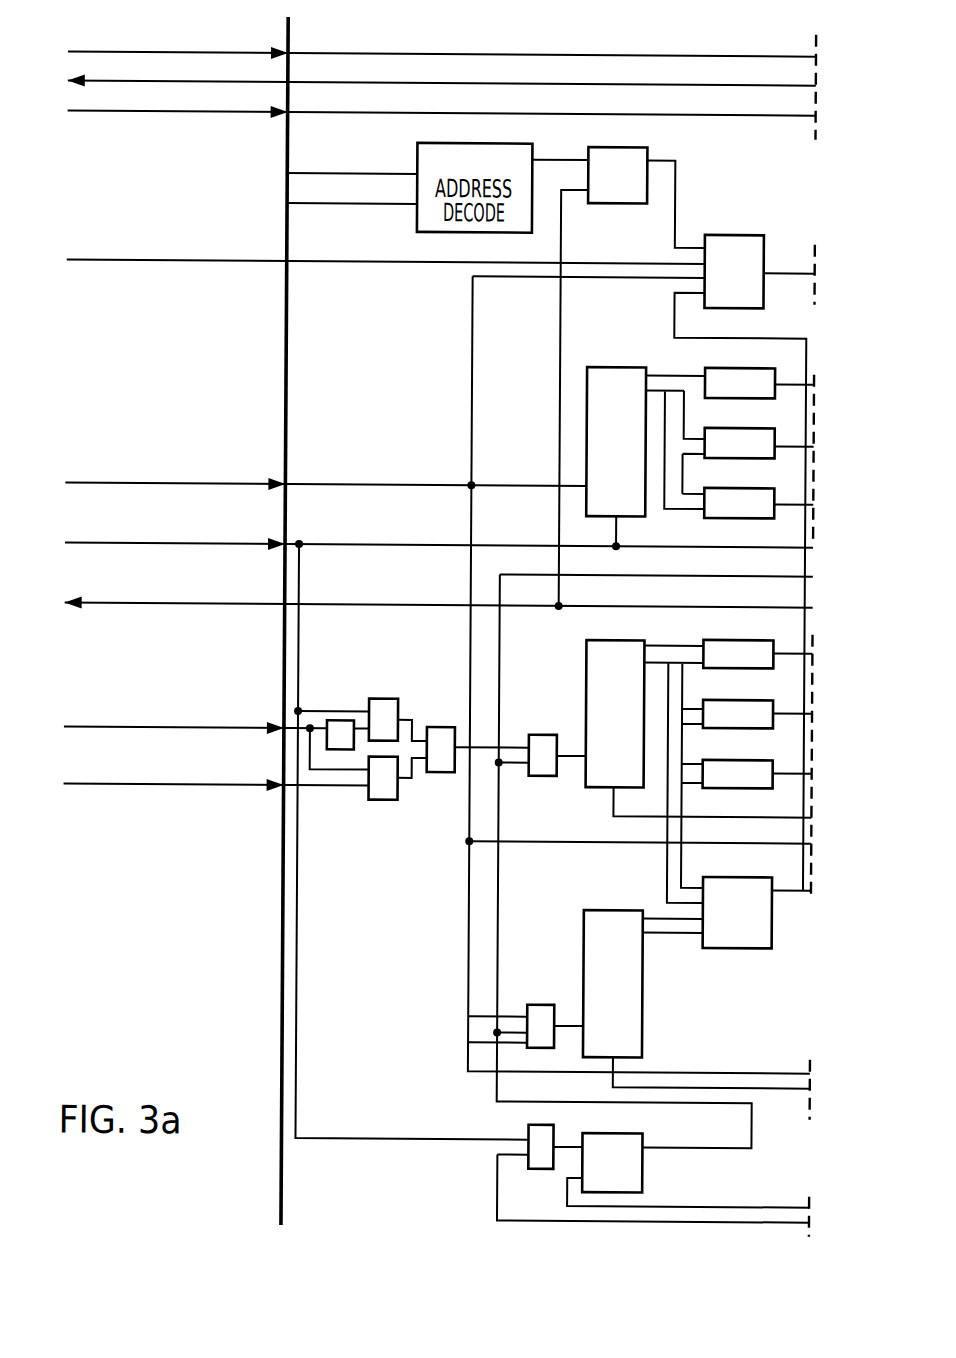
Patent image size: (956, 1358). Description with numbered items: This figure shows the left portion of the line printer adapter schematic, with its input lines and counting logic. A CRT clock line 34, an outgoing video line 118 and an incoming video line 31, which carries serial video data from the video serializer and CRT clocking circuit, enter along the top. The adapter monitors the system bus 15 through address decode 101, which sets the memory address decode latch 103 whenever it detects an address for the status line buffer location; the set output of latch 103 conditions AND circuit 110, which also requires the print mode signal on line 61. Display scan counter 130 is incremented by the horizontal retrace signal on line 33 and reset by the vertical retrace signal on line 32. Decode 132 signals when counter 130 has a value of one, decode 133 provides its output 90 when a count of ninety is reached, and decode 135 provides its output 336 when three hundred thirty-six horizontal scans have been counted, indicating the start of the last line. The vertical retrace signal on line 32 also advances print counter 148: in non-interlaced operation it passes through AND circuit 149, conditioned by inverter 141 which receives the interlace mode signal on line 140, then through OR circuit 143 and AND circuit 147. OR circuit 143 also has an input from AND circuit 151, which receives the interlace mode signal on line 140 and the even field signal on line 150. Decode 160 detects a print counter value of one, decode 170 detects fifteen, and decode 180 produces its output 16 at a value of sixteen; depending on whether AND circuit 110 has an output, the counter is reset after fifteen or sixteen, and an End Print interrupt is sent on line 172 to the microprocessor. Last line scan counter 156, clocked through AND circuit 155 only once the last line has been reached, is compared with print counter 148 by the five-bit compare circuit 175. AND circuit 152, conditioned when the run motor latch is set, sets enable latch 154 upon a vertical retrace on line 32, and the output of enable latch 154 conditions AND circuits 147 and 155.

The CRT clock line 34 is at (215, 52).
The video output line 118 is at (200, 82).
The line 31 is at (202, 113).
The system bus 15 is at (377, 173).
The address decode 101 is at (533, 188).
The memory address decode latch 103 is at (629, 207).
The print mode line 61 is at (212, 263).
The AND circuit 110 is at (719, 231).
The display scan counter 130 is at (589, 413).
The decode 132 is at (724, 396).
The decode 133 is at (726, 456).
The decoder output line 90 is at (794, 433).
The decode 135 is at (725, 516).
The decoder output line 336 is at (793, 492).
The horizontal retrace line 33 is at (391, 484).
The vertical retrace line 32 is at (391, 544).
The End Print interrupt line 172 is at (207, 606).
The interlace mode line 140 is at (265, 727).
The inverter 141 is at (341, 717).
The AND circuit 149 is at (376, 698).
The AND circuit 151 is at (379, 801).
The Even Field line 150 is at (245, 787).
The OR circuit 143 is at (450, 725).
The AND circuit 147 is at (532, 778).
The print counter 148 is at (590, 664).
The decode 160 is at (756, 667).
The decode 170 is at (756, 727).
The decode 180 is at (756, 787).
The decoder output line 16 is at (792, 762).
The last line scan counter 156 is at (648, 978).
The 5 bit compare circuit 175 is at (758, 947).
The AND circuit 155 is at (541, 1002).
The AND circuit 152 is at (535, 1125).
The enable latch 154 is at (650, 1185).